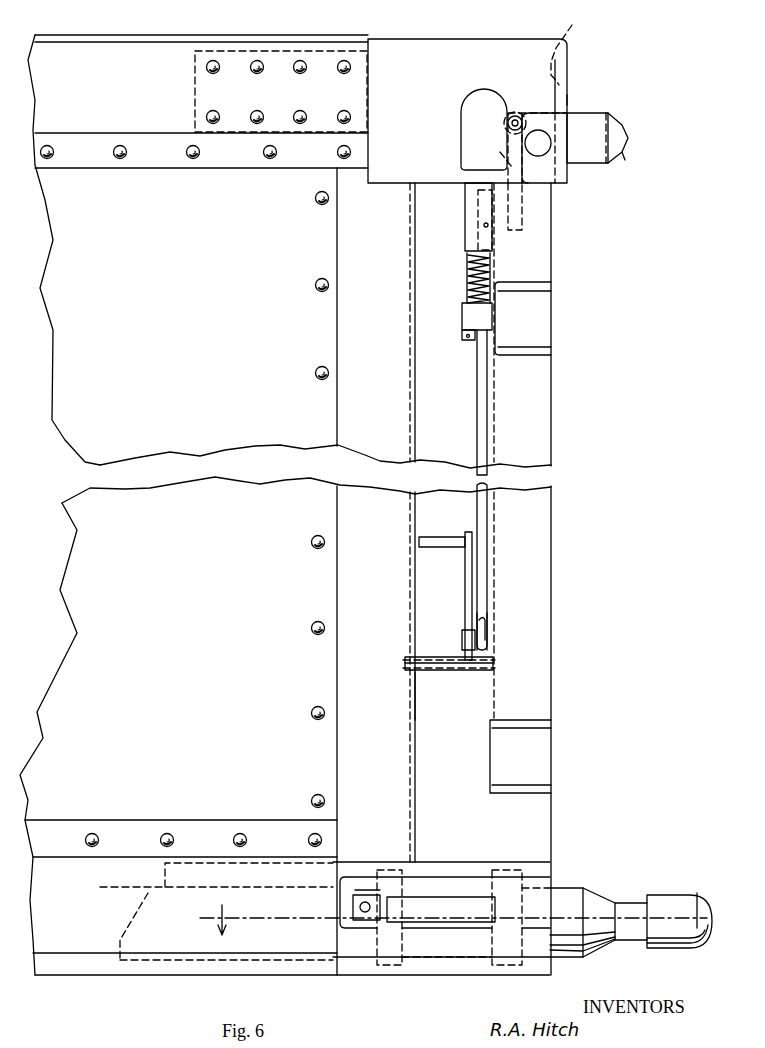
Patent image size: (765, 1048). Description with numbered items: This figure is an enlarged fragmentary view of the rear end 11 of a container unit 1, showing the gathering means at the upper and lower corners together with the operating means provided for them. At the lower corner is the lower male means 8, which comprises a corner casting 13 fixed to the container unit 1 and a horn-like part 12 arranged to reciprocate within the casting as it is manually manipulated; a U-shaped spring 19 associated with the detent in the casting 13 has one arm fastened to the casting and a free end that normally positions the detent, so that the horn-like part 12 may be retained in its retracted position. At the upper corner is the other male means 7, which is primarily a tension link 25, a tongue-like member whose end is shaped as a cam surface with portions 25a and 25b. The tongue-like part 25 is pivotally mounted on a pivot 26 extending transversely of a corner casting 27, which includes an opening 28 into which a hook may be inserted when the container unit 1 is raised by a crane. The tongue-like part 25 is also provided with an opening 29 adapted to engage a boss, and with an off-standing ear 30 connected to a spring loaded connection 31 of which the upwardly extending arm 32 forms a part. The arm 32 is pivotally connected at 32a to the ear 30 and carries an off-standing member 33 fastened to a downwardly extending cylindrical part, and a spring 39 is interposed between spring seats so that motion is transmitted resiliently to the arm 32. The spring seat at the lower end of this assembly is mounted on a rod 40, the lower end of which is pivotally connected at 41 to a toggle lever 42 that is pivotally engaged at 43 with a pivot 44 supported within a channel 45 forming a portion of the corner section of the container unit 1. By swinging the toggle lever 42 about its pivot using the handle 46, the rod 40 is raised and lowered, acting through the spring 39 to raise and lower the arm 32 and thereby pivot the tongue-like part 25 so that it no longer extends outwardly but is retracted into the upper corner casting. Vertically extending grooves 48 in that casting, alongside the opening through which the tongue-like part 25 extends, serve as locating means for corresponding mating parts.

The container unit 1 is at (195, 38).
The male means 7 is at (570, 100).
The lower male means 8 is at (582, 842).
The rear end of the container 11 is at (555, 430).
The horn-like part 12 is at (580, 893).
The corner casting 13 is at (455, 975).
The U-shaped spring 19 is at (440, 893).
The tension link 25 is at (625, 118).
The cam surface portion 25a is at (624, 158).
The cam surface portion 25b is at (630, 140).
The pivot 26 is at (547, 152).
The corner casting 27 is at (488, 53).
The opening 28 is at (465, 112).
The opening 29 is at (600, 113).
The off-standing ear 30 is at (520, 115).
The spring loaded connection 31 is at (495, 258).
The arm 32 is at (500, 157).
The pivotal connection 32a is at (510, 115).
The off-standing member 33 is at (520, 225).
The spring 39 is at (468, 278).
The rod 40 is at (480, 410).
The pivotal connection 41 is at (485, 643).
The toggle lever 42 is at (470, 580).
The pivotal engagement 43 is at (460, 672).
The pivot 44 is at (437, 655).
The channel 45 is at (487, 718).
The handle 46 is at (450, 537).
The grooves 48 is at (572, 44).